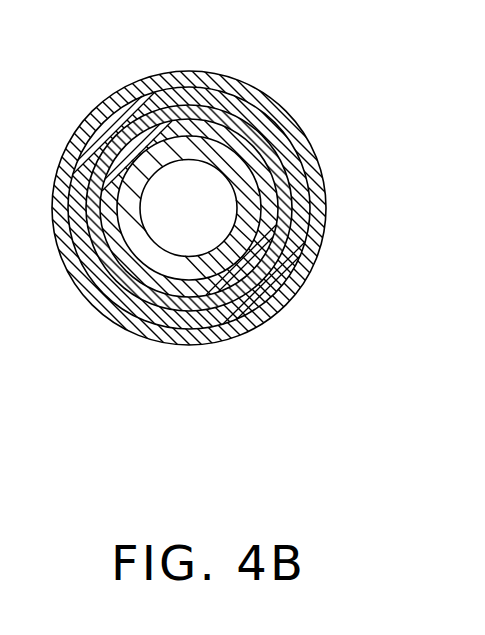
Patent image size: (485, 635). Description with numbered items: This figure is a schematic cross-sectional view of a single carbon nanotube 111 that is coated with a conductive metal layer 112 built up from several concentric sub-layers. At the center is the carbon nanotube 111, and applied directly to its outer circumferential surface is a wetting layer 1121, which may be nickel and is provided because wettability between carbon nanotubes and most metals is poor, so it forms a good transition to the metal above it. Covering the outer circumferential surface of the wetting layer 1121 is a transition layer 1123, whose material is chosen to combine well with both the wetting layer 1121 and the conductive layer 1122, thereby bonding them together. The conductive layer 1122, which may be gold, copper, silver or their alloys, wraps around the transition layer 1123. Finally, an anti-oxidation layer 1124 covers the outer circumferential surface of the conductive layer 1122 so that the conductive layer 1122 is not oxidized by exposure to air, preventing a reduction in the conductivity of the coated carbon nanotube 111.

The carbon nanotube 111 is at (253, 203).
The conductive metal layer 112 is at (244, 183).
The wetting layer 1121 is at (260, 162).
The conductive layer 1122 is at (258, 130).
The transition layer 1123 is at (236, 112).
The anti-oxidation layer 1124 is at (212, 80).